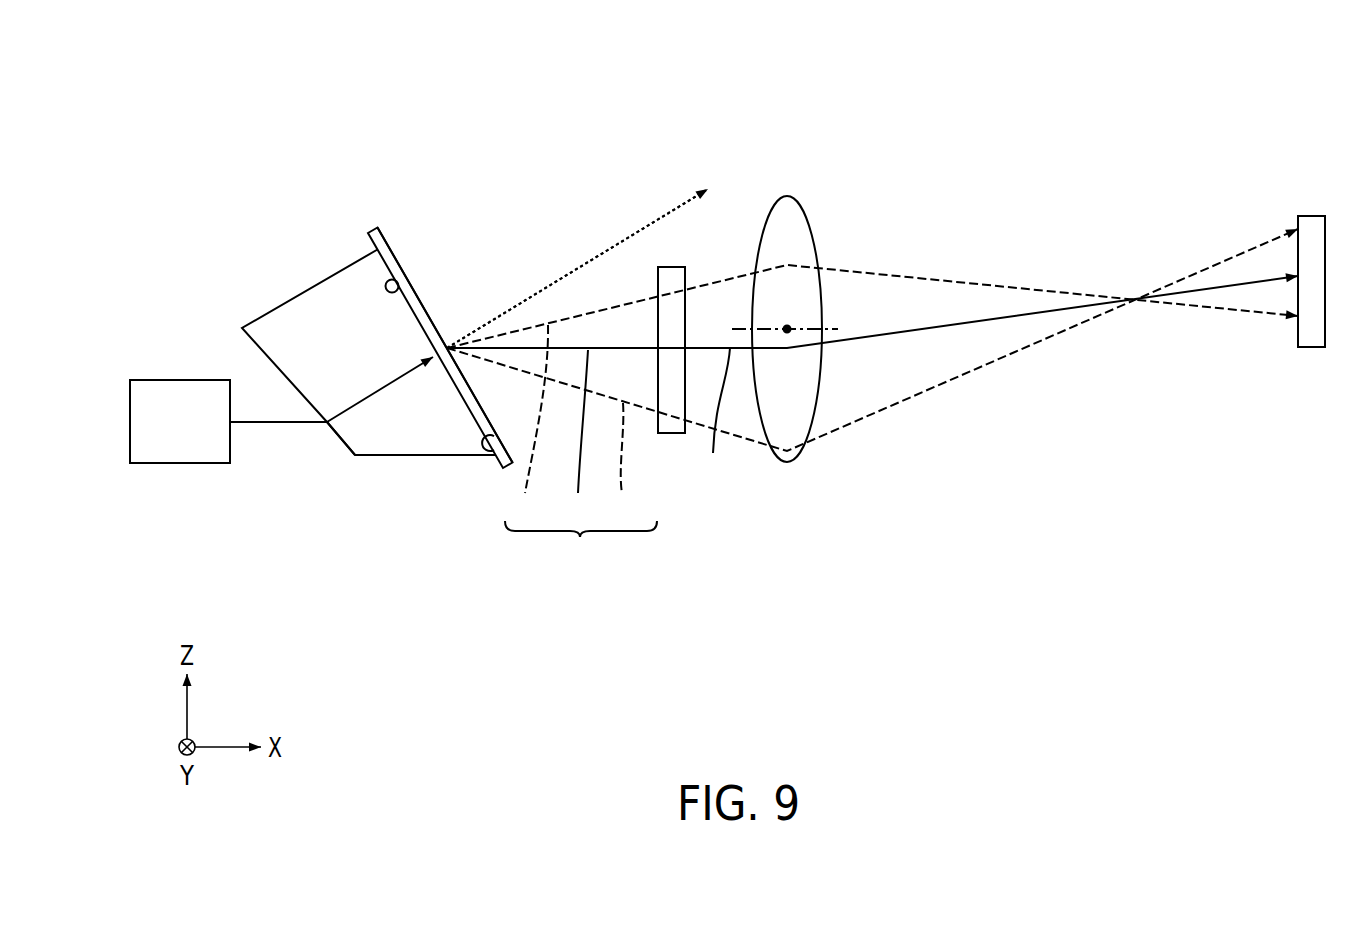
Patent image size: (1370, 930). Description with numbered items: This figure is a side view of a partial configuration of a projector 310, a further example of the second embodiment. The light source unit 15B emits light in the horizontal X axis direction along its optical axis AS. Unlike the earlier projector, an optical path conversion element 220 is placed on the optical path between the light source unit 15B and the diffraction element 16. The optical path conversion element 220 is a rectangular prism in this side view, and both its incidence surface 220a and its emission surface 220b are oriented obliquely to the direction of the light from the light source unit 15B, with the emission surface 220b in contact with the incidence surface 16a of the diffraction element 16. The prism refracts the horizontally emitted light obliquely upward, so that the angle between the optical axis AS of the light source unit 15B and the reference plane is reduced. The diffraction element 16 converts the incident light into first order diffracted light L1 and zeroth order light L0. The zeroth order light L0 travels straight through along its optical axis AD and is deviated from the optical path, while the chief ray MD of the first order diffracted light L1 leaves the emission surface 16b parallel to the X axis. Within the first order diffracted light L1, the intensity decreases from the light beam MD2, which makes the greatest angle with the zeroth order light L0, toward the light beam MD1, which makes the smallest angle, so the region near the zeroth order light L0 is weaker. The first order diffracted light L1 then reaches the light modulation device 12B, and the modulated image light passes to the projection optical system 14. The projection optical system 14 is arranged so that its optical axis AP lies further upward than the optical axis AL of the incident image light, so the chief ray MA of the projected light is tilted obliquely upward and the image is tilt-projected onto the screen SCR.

The projector 310 is at (515, 100).
The light source unit 15B is at (173, 453).
The optical axis of the light source unit AS is at (260, 422).
The optical path conversion element 220 is at (303, 303).
The incidence surface 220a is at (343, 447).
The emission surface 220b is at (500, 462).
The diffraction element 16 is at (375, 237).
The incidence surface 16a is at (400, 292).
The emission surface 16b is at (478, 393).
The 0-th order light L0 is at (669, 212).
The optical axis of the 0-th order light AD is at (590, 258).
The chief ray of projected light MA is at (1035, 315).
The light beam MD1 is at (532, 425).
The chief ray of the first order diffracted light MD is at (578, 438).
The light beam MD2 is at (626, 464).
The first order diffracted light L1 is at (581, 544).
The light modulation device 12B is at (673, 268).
The projection optical system 14 is at (793, 220).
The optical axis of the projection optical system AP is at (823, 328).
The optical axis of the incident image light AL is at (716, 417).
The screen SCR is at (1313, 223).